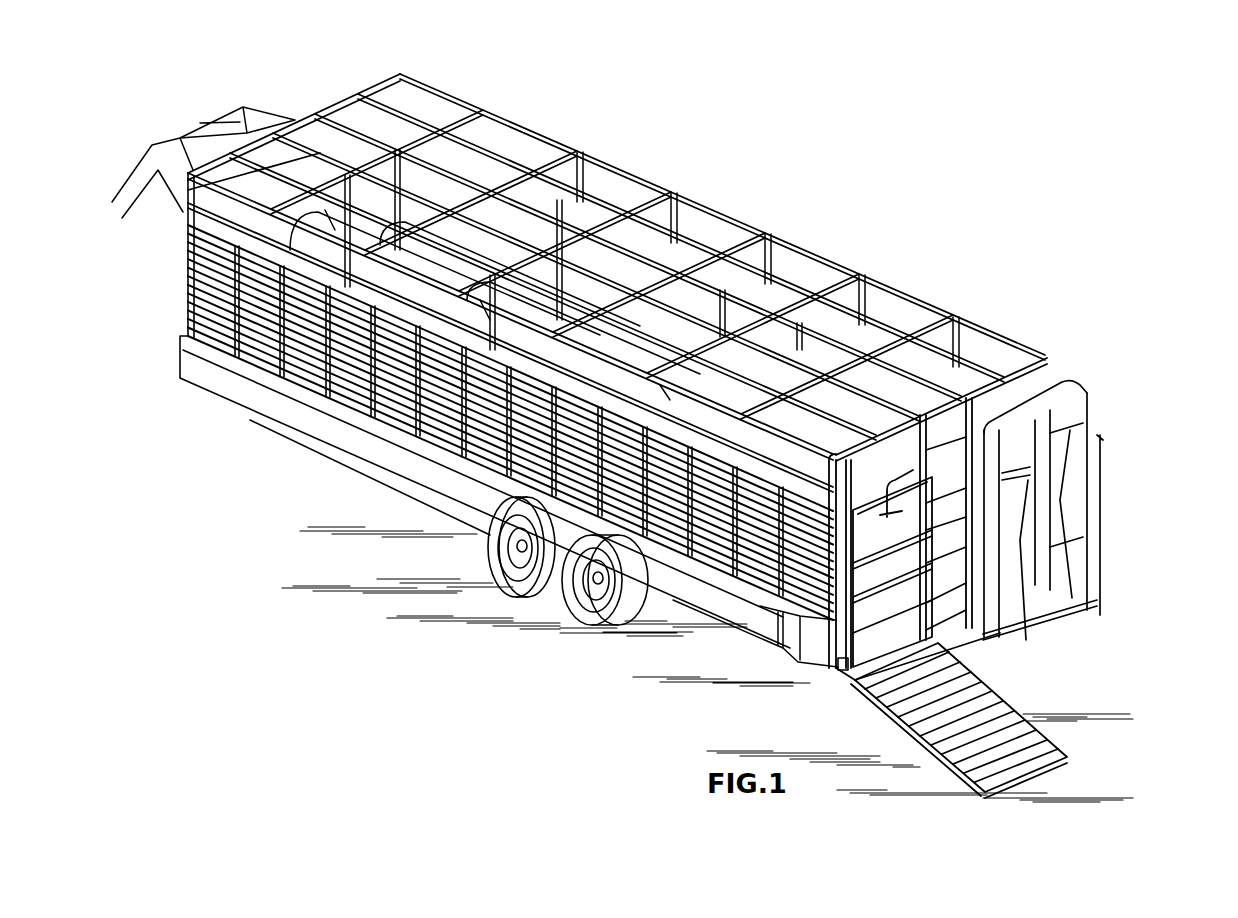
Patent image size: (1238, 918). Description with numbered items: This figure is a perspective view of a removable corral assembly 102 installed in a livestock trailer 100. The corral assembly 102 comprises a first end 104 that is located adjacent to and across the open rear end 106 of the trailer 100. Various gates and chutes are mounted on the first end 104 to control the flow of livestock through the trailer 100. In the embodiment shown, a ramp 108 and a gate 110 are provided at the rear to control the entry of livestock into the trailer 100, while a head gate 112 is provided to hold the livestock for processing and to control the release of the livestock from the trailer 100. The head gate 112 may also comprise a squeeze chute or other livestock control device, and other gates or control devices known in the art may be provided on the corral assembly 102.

The livestock trailer 100 is at (290, 417).
The removable corral assembly 102 is at (478, 172).
The first end 104 is at (963, 640).
The open rear end 106 is at (985, 376).
The ramp 108 is at (1063, 763).
The gate 110 is at (842, 672).
The head gate 112 is at (1077, 531).